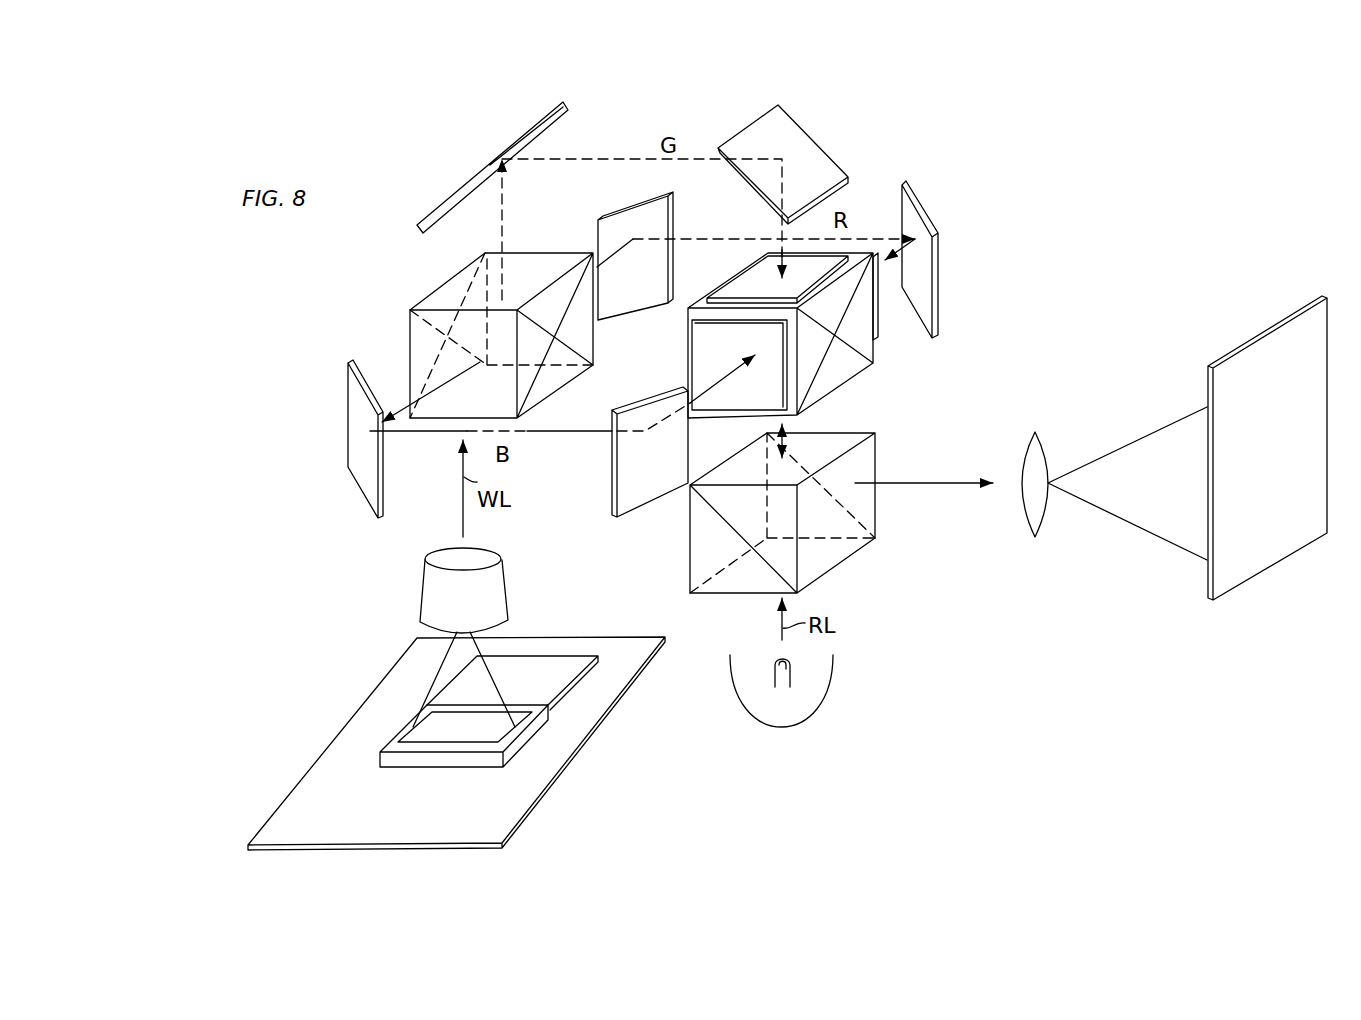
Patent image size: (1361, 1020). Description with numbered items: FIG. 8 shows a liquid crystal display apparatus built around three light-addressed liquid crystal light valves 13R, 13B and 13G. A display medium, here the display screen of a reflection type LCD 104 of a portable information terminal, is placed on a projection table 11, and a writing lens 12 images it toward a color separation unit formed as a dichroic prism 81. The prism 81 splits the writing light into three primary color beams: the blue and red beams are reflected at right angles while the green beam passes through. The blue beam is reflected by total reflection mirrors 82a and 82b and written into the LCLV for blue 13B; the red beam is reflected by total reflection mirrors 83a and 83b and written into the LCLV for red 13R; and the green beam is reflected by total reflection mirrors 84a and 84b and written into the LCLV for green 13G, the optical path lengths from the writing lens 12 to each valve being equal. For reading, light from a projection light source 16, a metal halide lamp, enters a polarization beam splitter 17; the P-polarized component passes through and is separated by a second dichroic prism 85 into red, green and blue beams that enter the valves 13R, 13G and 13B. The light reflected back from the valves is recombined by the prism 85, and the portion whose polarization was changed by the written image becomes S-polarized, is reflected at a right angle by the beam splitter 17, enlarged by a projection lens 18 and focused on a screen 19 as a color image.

The total reflection mirror 84a is at (523, 134).
The total reflection mirror 84b is at (780, 125).
The total reflection mirror 83a is at (630, 208).
The total reflection mirror 83b is at (918, 207).
The color separation unit (dichroic prism) 81 is at (432, 292).
The total reflection mirror 82a is at (360, 418).
The total reflection mirror 82b is at (623, 470).
The dichroic prism (color separation/combination unit) 85 is at (840, 372).
The light-addressed liquid crystal light valve for green 13G is at (803, 263).
The light-addressed liquid crystal light valve for blue 13B is at (708, 352).
The light-addressed liquid crystal light valve for red 13R is at (878, 320).
The polarization beam splitter 17 is at (853, 557).
The projection light source 16 is at (832, 677).
The projection lens 18 is at (1032, 528).
The screen 19 is at (1240, 588).
The writing lens 12 is at (440, 595).
The reflection type LCD 104 is at (423, 733).
The projection table 11 is at (593, 737).